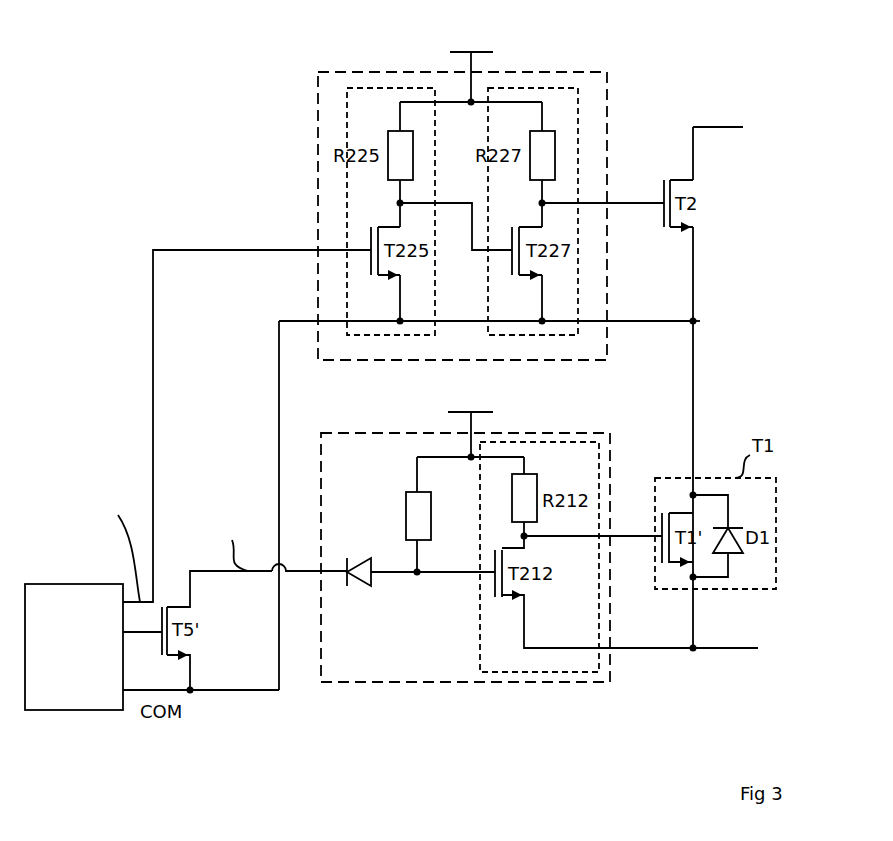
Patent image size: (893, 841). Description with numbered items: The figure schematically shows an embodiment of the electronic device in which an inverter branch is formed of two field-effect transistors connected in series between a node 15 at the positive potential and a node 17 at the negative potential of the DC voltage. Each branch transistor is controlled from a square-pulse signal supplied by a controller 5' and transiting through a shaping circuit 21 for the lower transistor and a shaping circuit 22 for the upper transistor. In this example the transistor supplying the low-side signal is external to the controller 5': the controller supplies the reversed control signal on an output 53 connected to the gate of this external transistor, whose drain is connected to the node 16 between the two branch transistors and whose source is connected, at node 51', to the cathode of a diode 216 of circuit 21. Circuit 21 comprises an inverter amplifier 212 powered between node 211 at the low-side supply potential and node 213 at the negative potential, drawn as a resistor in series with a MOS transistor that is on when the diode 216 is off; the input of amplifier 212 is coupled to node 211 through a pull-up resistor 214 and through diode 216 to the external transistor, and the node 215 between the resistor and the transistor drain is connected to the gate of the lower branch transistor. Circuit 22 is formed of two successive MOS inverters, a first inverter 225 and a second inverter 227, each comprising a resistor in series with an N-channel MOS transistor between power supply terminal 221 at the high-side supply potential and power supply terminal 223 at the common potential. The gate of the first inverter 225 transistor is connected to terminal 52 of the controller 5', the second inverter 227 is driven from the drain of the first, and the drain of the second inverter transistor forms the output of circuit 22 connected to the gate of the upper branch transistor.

The shaping circuit 22 is at (607, 100).
The power supply terminal 221 is at (474, 62).
The first inverter 225 is at (347, 118).
The second inverter 227 is at (607, 142).
The power supply terminal 223 is at (458, 318).
The node 15 is at (730, 127).
The node 16 is at (700, 322).
The shaping circuit 21 is at (388, 683).
The node 211 is at (475, 428).
The inverter amplifier 212 is at (480, 618).
The node 213 is at (625, 649).
The resistor 214 is at (406, 520).
The node 215 is at (632, 534).
The diode 216 is at (366, 588).
The node 17 is at (725, 648).
The controller 5' is at (66, 619).
The terminal 52 is at (122, 600).
The output 53 is at (126, 634).
The node 51' is at (279, 543).